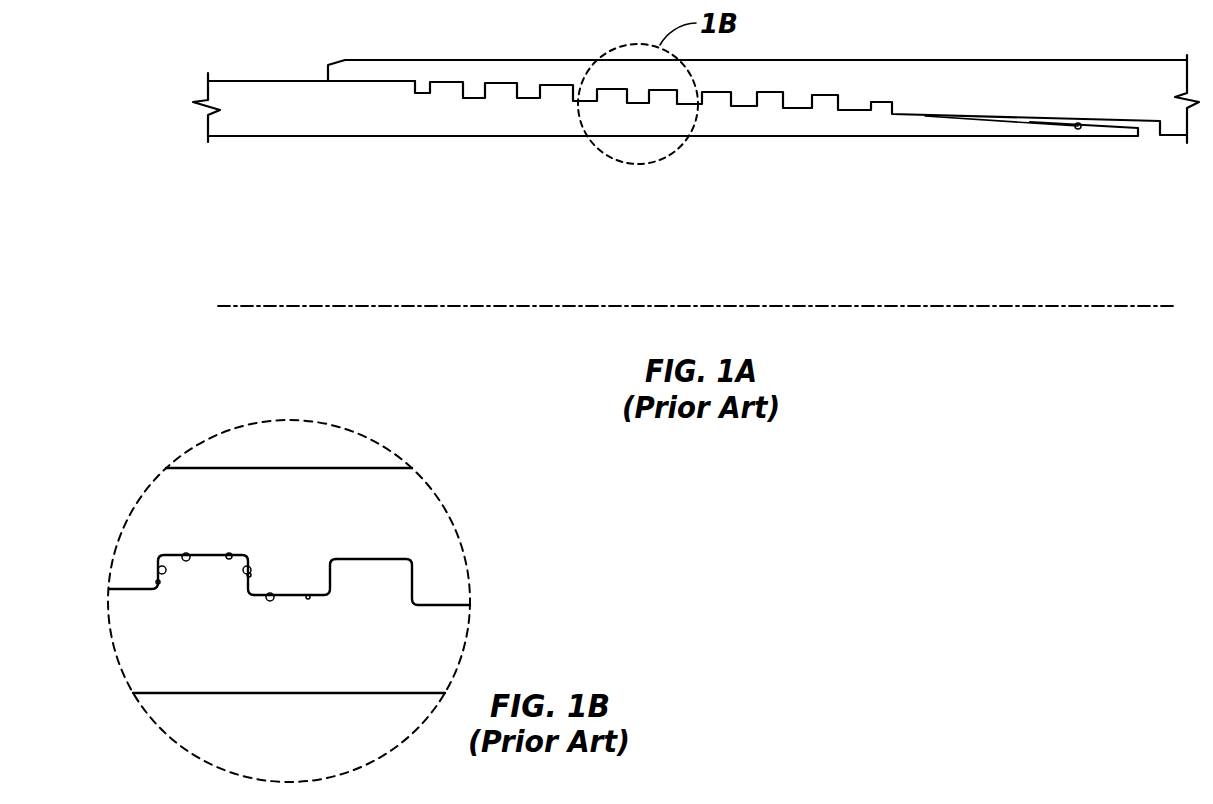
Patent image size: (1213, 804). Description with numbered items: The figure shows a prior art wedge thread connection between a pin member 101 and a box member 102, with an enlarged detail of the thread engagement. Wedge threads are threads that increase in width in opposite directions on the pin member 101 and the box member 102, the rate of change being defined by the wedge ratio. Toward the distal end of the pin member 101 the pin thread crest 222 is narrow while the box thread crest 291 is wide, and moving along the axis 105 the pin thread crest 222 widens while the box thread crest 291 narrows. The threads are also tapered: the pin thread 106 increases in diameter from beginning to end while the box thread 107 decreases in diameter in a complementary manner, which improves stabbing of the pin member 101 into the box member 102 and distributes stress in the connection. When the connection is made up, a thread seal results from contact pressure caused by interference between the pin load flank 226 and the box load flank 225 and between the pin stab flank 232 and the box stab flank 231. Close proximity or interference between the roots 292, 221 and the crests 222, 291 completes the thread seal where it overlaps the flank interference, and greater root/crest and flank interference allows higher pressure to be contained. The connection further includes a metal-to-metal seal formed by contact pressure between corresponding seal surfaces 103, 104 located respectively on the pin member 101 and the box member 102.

In FIG. 1A, the pin member 101 is at (308, 119).
In FIG. 1B, the pin member 101 is at (194, 667).
In FIG. 1A, the box member 102 is at (998, 100).
In FIG. 1B, the box member 102 is at (406, 516).
In FIG. 1A, the seal surface 103 is at (1043, 121).
In FIG. 1A, the seal surface 104 is at (1078, 124).
In FIG. 1A, the axis 105 is at (1023, 306).
In FIG. 1B, the pin thread 106 is at (229, 600).
In FIG. 1B, the box thread 107 is at (321, 584).
In FIG. 1B, the root 221 is at (188, 553).
In FIG. 1B, the pin thread crest 222 is at (229, 553).
In FIG. 1B, the box load flank 225 is at (158, 570).
In FIG. 1B, the pin load flank 226 is at (156, 582).
In FIG. 1B, the box stab flank 231 is at (254, 576).
In FIG. 1B, the pin stab flank 232 is at (251, 566).
In FIG. 1B, the box thread crest 291 is at (308, 600).
In FIG. 1B, the root 292 is at (270, 601).